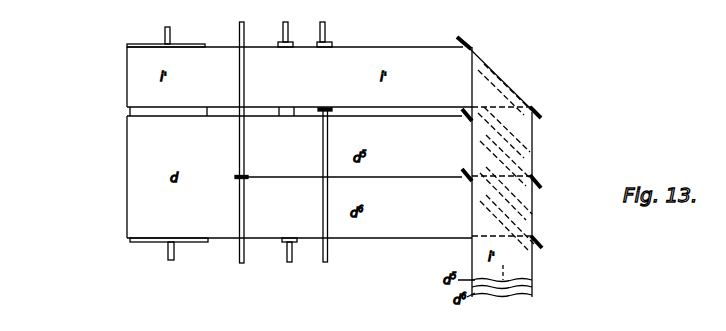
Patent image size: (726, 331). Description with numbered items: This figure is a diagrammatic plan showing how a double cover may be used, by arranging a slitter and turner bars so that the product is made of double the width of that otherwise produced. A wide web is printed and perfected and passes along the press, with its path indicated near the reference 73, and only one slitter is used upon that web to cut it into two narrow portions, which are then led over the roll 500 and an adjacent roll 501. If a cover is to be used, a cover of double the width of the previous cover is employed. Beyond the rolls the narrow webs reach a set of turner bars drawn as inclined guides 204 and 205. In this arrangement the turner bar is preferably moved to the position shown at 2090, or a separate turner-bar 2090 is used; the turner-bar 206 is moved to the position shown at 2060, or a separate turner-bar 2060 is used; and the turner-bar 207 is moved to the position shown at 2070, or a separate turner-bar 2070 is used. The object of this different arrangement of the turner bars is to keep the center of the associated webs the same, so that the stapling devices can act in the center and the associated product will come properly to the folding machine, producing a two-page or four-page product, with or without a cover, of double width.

The strip between upper and lower sections 73 is at (130, 113).
The roll 500 is at (282, 43).
The pin 501 is at (330, 43).
The turner-bar 2090 is at (468, 42).
The inclined slot 204 is at (487, 78).
The inclined slot 205 is at (518, 147).
The turner-bar 2060 is at (541, 183).
The turner-bar 206 is at (523, 213).
The turner-bar 2070 is at (543, 243).
The turner-bar 207 is at (529, 251).